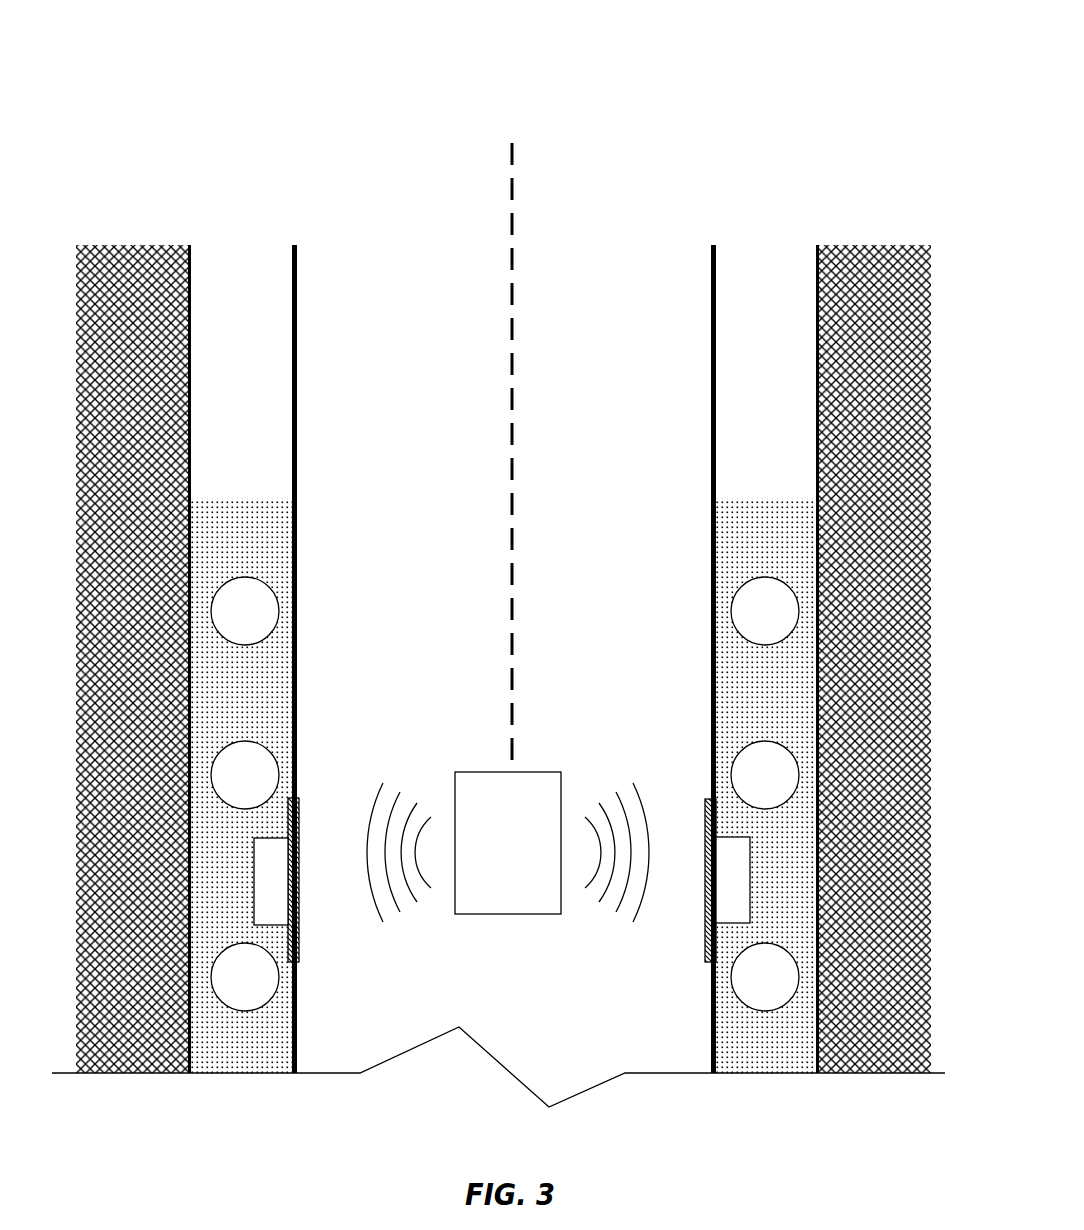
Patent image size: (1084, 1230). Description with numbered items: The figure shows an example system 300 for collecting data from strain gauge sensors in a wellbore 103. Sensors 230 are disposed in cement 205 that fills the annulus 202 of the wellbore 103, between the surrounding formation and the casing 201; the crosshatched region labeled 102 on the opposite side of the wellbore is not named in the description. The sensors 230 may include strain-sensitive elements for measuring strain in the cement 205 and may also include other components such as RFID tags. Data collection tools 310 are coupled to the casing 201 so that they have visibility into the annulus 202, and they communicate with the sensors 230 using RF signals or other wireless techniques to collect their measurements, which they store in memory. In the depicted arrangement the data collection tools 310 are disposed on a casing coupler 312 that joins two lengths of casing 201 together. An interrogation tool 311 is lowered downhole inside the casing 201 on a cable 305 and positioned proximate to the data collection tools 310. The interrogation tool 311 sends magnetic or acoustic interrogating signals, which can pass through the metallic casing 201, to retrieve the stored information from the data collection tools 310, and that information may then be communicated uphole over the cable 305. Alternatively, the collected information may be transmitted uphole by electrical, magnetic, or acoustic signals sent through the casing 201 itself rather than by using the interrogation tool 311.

The system 300 is at (737, 90).
The formation (first side) 102 is at (147, 243).
The wellbore 103 is at (640, 243).
The annulus 202 is at (256, 260).
The casing 201 is at (301, 272).
The cement 205 is at (504, 659).
The cable 305 is at (517, 403).
The sensors 230 is at (229, 622).
The data collection tools 310 is at (502, 881).
The interrogation tool 311 is at (489, 854).
The casing coupler 312 is at (301, 916).